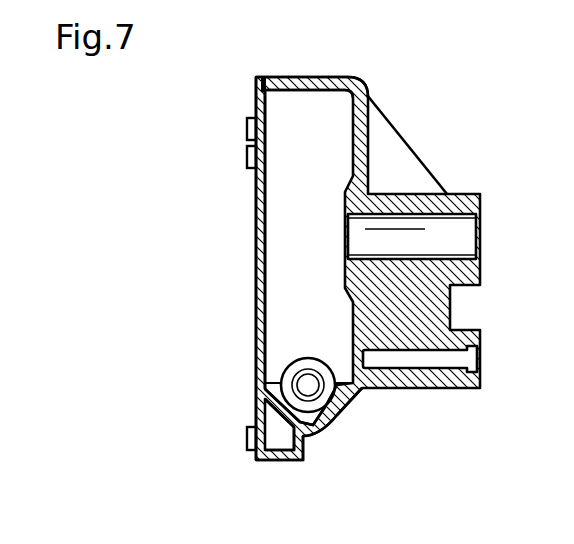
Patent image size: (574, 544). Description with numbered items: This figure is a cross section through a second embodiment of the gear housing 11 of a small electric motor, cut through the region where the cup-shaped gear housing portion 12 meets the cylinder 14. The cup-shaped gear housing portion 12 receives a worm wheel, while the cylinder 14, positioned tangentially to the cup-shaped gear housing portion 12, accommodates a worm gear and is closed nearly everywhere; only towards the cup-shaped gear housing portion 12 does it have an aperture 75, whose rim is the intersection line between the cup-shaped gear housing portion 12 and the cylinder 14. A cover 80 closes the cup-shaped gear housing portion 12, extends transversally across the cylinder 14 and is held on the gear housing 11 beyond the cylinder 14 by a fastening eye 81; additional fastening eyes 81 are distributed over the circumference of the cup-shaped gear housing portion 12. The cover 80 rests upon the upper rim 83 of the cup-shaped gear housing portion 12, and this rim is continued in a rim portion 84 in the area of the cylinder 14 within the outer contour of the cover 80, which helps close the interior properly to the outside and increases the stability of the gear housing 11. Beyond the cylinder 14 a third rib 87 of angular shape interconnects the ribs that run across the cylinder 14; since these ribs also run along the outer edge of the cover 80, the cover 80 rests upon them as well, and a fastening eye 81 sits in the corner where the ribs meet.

The gear housing 11 is at (367, 79).
The cup-shaped gear housing portion 12 is at (313, 77).
The cylinder 14 is at (273, 442).
The aperture 75 is at (327, 360).
The cover 80 is at (254, 340).
The fastening eye 81 is at (250, 133).
The upper rim 83 is at (258, 77).
The rim portion 84 is at (266, 393).
The third rib 87 is at (291, 458).